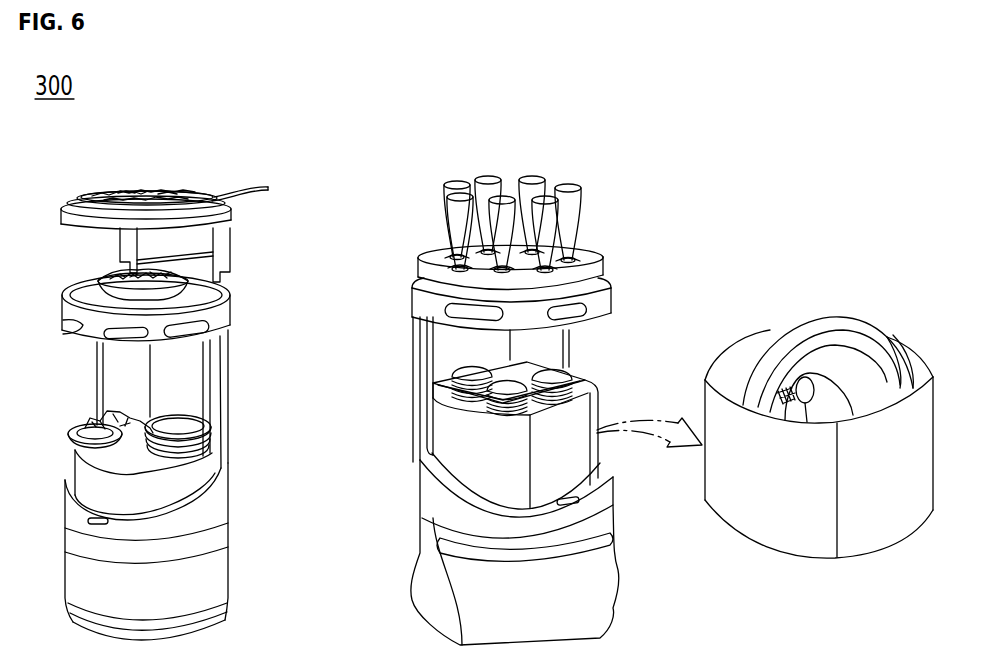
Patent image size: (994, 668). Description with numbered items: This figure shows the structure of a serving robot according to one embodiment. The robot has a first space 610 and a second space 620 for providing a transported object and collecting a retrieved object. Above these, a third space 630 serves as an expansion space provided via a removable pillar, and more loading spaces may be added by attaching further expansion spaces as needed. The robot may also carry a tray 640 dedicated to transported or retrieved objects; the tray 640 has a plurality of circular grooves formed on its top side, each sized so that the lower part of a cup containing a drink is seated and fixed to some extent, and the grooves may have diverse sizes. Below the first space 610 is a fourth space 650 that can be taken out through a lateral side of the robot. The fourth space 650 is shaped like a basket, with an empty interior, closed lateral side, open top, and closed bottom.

The first space 610 is at (208, 459).
The second space 620 is at (220, 322).
The third space 630 is at (222, 218).
The tray 640 is at (433, 272).
The fourth space 650 is at (457, 446).